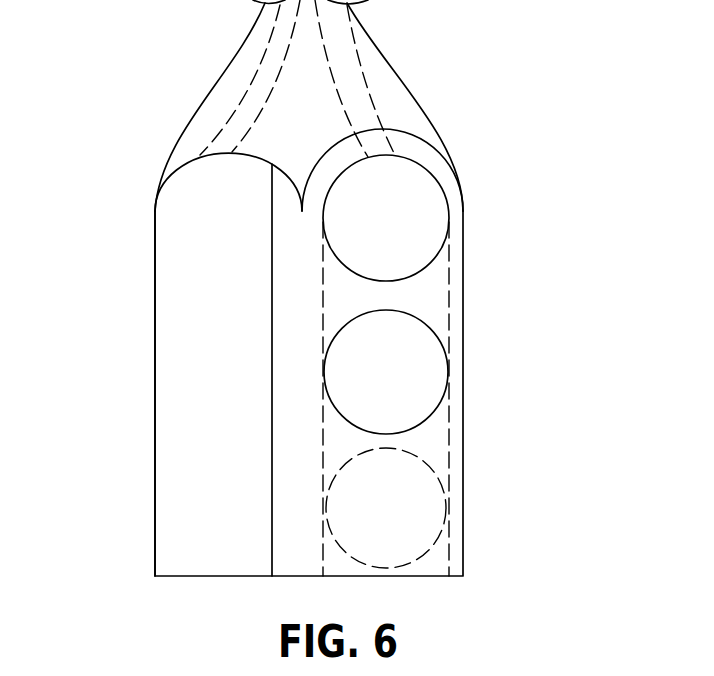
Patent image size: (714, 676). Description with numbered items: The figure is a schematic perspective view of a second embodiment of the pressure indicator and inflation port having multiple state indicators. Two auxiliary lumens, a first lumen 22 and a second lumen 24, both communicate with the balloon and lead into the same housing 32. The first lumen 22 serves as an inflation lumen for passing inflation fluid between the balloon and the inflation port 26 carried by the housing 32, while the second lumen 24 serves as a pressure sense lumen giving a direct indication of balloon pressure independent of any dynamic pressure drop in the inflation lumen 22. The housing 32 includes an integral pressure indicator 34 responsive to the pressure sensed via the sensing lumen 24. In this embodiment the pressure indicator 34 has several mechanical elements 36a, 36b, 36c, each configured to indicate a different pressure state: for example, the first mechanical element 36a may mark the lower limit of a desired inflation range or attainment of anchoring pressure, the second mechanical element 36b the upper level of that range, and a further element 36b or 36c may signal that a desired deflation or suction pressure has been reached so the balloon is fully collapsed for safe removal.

The first auxiliary lumen 22 is at (237, 96).
The second auxiliary lumen 24 is at (360, 88).
The inflation port 26 is at (190, 416).
The housing 32 is at (104, 193).
The pressure indicator 34 is at (472, 359).
The first mechanical element 36a is at (432, 212).
The second mechanical element 36b is at (432, 365).
The further mechanical element 36c is at (431, 508).